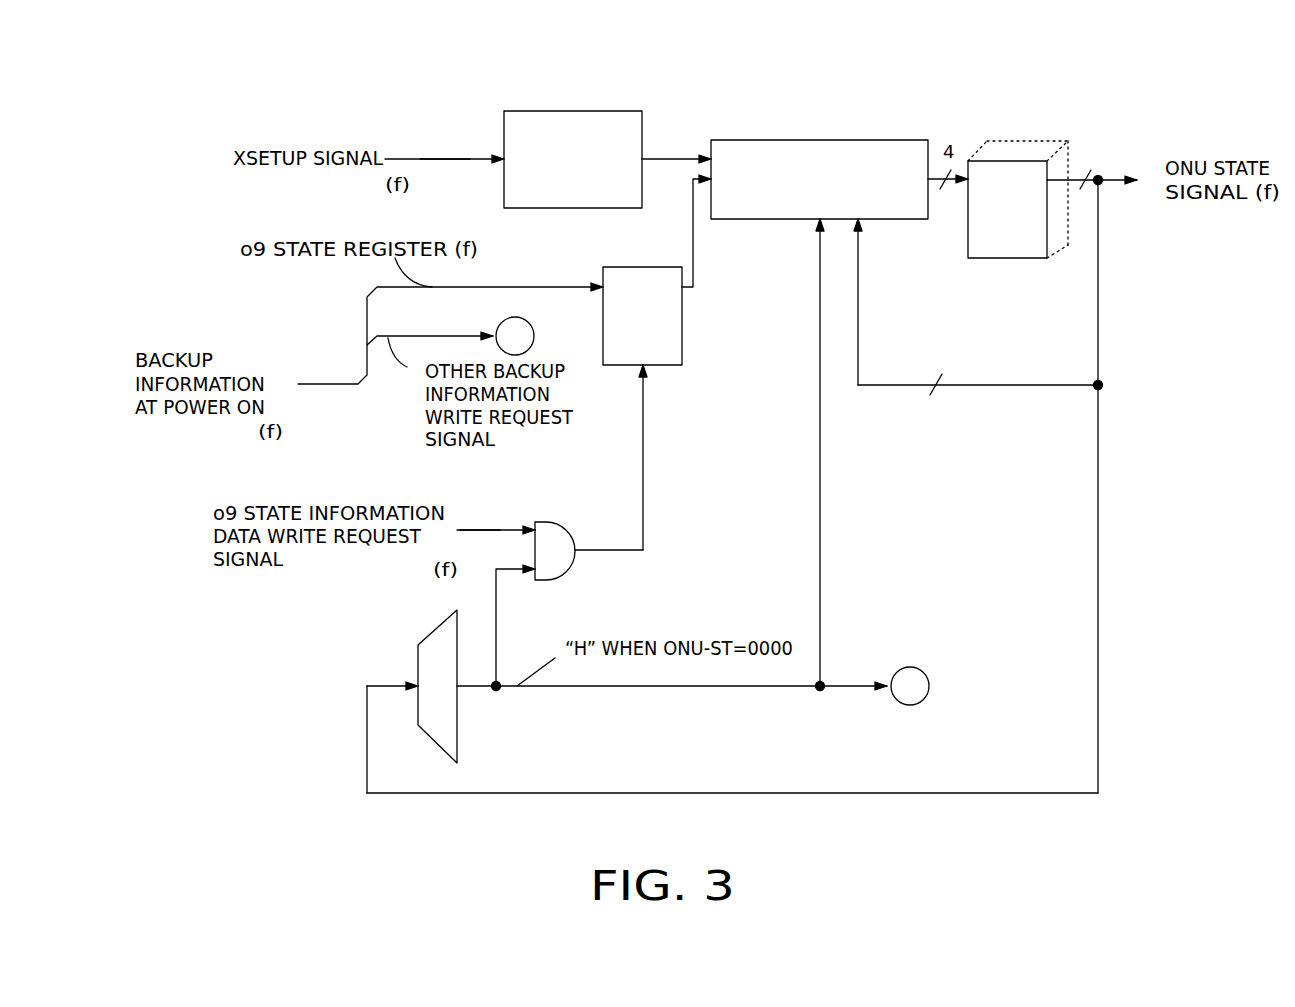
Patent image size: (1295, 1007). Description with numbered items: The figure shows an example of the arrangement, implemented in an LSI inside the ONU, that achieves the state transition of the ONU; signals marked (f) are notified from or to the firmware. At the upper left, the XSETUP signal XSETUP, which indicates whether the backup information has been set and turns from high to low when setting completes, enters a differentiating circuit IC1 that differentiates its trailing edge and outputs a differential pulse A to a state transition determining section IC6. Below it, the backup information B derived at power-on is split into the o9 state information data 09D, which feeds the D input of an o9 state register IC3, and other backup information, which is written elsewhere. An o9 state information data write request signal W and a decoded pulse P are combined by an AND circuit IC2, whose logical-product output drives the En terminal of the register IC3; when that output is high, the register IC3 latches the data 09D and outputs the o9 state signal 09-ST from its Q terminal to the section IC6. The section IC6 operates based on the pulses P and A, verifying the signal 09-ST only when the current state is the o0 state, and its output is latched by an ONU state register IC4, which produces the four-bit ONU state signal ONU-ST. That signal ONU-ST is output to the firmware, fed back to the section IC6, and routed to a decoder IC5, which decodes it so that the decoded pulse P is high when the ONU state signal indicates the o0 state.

The differentiating circuit IC1 is at (596, 111).
The AND circuit IC2 is at (547, 522).
The o9 state register IC3 is at (658, 369).
The ONU state register IC4 is at (968, 210).
The decoder IC5 is at (458, 715).
The state transition determining section IC6 is at (800, 140).
The XSETUP signal XSETUP is at (462, 156).
The differential pulse A is at (652, 159).
The backup information B is at (350, 377).
The o9 state information data write request signal W is at (467, 530).
The decoded pulse P is at (663, 688).
The o9 state information data 09D is at (574, 284).
The o9 state signal 09-ST is at (693, 258).
The ONU state signal ONU-ST is at (1098, 288).